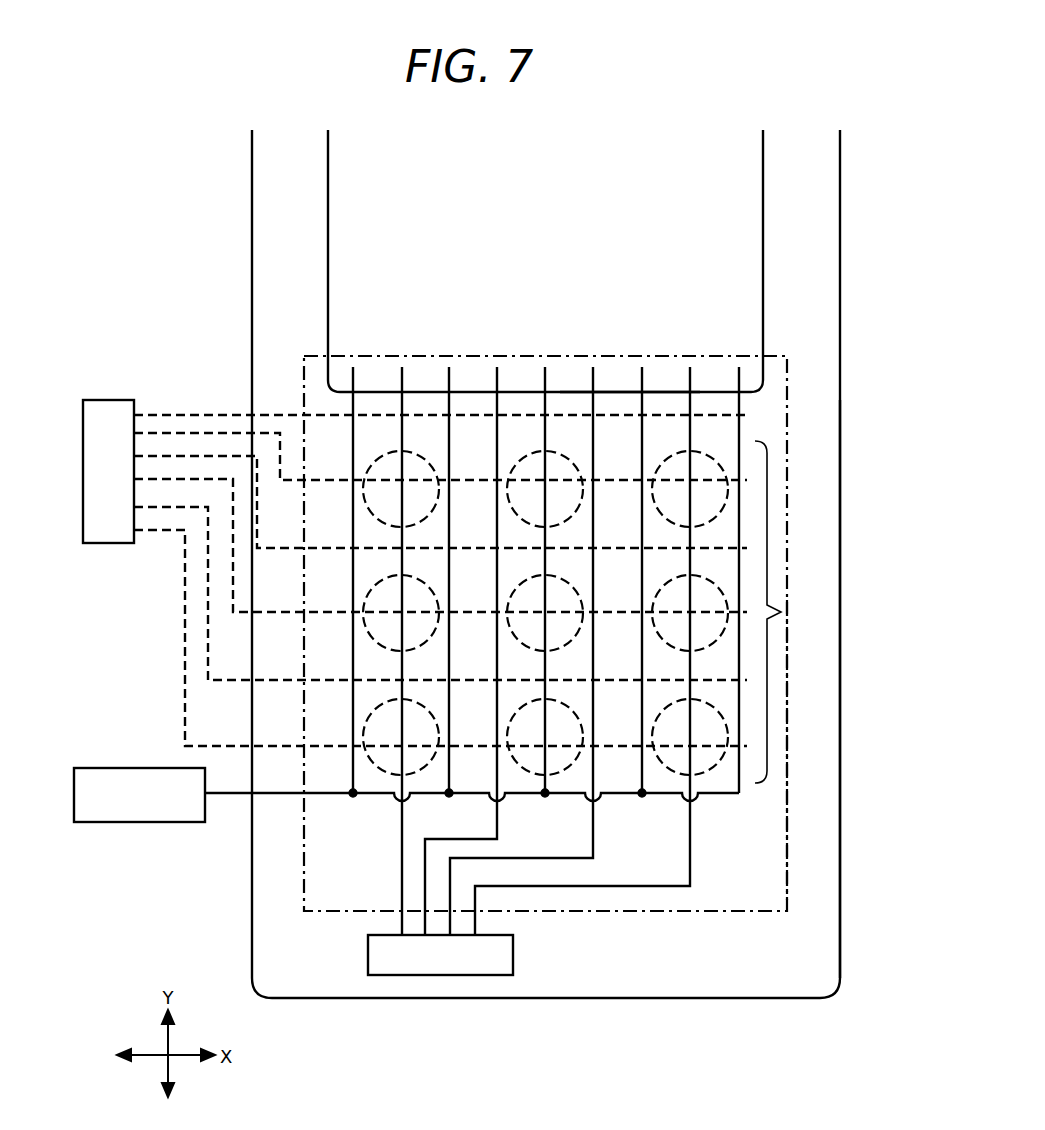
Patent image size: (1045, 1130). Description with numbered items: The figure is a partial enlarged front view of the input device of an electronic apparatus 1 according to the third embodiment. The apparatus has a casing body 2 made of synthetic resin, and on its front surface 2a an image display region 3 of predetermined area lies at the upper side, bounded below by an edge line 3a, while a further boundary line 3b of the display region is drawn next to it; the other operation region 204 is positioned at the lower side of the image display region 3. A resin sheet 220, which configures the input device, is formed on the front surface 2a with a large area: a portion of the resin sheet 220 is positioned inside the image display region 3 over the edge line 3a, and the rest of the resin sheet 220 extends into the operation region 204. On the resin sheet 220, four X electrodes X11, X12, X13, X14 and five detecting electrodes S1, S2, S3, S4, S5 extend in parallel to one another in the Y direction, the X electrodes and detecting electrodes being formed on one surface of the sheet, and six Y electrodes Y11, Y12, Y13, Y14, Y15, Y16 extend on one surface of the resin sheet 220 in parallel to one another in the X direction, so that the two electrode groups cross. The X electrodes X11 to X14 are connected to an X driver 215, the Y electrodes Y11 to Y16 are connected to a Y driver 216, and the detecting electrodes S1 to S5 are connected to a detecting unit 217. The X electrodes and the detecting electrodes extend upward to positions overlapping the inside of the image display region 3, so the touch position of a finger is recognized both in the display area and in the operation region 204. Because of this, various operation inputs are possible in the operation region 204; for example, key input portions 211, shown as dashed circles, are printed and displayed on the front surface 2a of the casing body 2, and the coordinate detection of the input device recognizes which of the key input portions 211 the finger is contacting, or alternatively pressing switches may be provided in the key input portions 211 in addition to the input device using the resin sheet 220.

The electronic apparatus 1 is at (855, 312).
The casing body 2 is at (856, 476).
The front surface 2a is at (822, 770).
The image display region 3 is at (745, 203).
The edge line 3a is at (620, 392).
The shield electrode 3b is at (330, 194).
The operation region 204 is at (781, 612).
The key input portions 211 is at (528, 452).
The X driver 215 is at (513, 952).
The Y driver 216 is at (115, 400).
The detecting unit 217 is at (165, 822).
The resin sheet 220 is at (806, 697).
The X electrode X11 is at (402, 825).
The X electrode X12 is at (497, 825).
The X electrode X13 is at (597, 842).
The X electrode X14 is at (692, 838).
The Y electrode Y11 is at (270, 413).
The Y electrode Y12 is at (292, 483).
The Y electrode Y13 is at (287, 550).
The Y electrode Y14 is at (242, 614).
The Y electrode Y15 is at (227, 682).
The Y electrode Y16 is at (193, 748).
The detecting electrode S1 is at (353, 768).
The detecting electrode S2 is at (449, 766).
The detecting electrode S3 is at (545, 770).
The detecting electrode S4 is at (642, 776).
The detecting electrode S5 is at (741, 790).